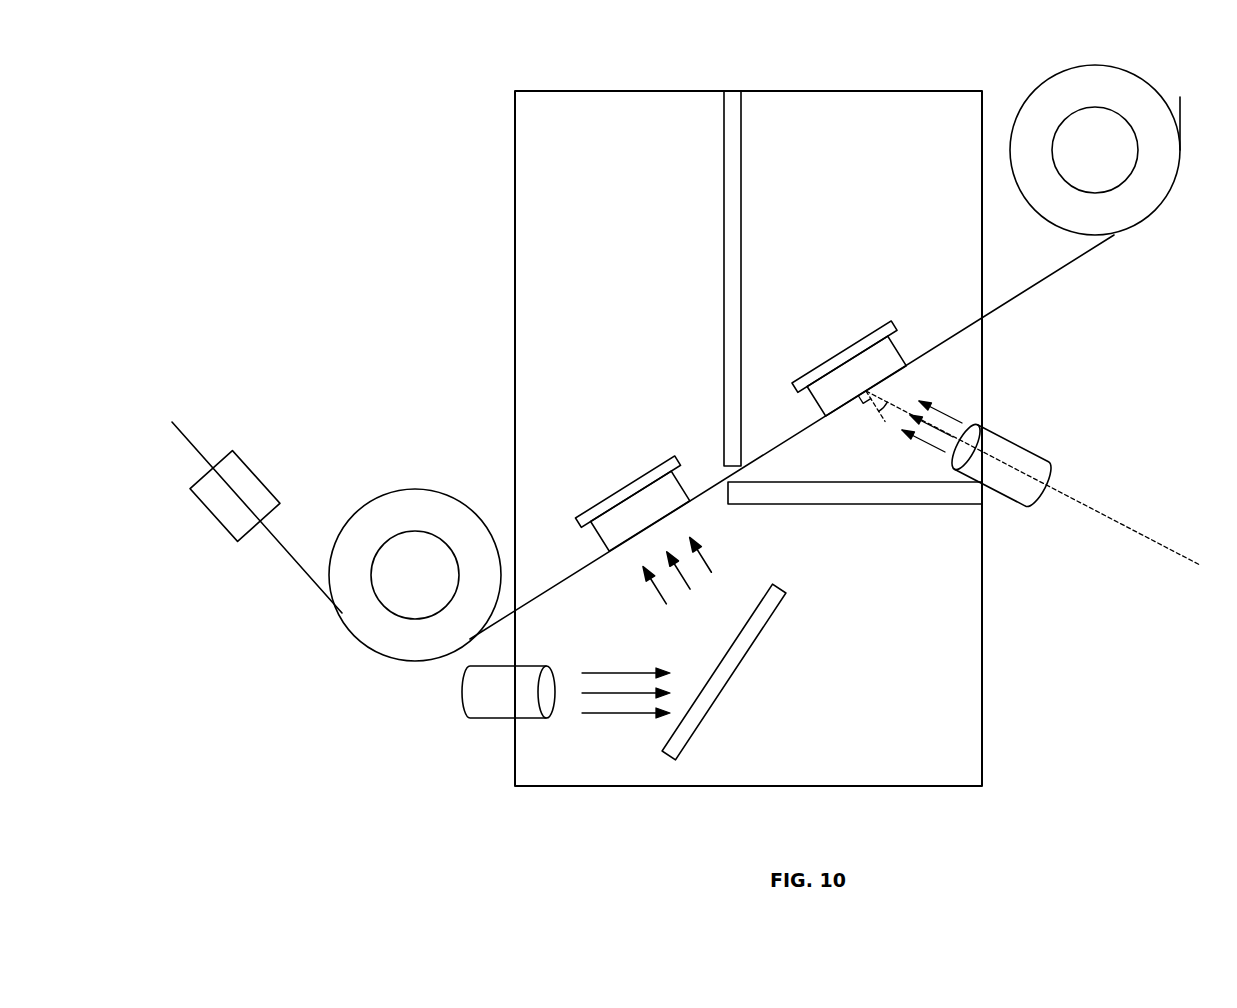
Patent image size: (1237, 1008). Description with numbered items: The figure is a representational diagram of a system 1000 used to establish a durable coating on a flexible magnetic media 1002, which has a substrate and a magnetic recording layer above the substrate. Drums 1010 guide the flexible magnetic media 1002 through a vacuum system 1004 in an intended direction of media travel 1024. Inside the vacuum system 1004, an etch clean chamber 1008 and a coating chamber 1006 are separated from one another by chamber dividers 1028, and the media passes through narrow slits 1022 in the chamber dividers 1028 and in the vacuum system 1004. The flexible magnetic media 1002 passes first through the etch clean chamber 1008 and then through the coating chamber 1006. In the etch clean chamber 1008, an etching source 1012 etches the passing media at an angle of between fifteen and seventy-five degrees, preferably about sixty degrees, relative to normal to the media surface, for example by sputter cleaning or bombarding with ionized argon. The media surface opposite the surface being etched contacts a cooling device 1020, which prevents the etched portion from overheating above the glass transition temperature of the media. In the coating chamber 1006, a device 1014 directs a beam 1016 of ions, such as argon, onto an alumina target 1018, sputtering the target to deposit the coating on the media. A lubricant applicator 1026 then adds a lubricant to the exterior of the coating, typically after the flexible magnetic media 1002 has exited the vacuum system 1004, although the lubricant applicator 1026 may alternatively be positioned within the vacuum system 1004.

The system 1000 is at (268, 125).
The flexible magnetic media 1002 is at (1112, 237).
The vacuum system 1004 is at (514, 151).
The coating chamber 1006 is at (538, 307).
The etch clean chamber 1008 is at (762, 242).
The drums 1010 is at (1043, 85).
The etching source 1012 is at (1021, 447).
The device 1014 is at (462, 696).
The beam 1016 is at (599, 723).
The alumina target 1018 is at (667, 758).
The cooling device 1020 is at (846, 352).
The narrow slits 1022 is at (970, 318).
The intended direction of media travel 1024 is at (1003, 340).
The lubricant applicator 1026 is at (257, 476).
The chamber dividers 1028 is at (748, 110).